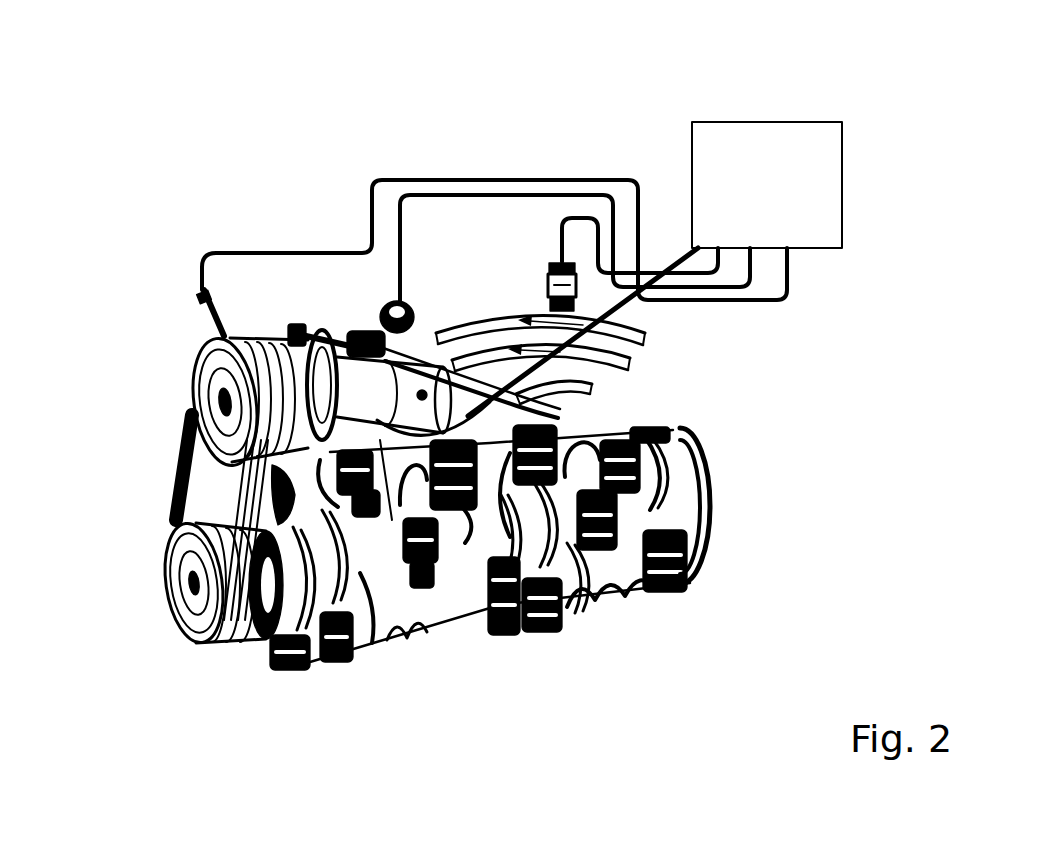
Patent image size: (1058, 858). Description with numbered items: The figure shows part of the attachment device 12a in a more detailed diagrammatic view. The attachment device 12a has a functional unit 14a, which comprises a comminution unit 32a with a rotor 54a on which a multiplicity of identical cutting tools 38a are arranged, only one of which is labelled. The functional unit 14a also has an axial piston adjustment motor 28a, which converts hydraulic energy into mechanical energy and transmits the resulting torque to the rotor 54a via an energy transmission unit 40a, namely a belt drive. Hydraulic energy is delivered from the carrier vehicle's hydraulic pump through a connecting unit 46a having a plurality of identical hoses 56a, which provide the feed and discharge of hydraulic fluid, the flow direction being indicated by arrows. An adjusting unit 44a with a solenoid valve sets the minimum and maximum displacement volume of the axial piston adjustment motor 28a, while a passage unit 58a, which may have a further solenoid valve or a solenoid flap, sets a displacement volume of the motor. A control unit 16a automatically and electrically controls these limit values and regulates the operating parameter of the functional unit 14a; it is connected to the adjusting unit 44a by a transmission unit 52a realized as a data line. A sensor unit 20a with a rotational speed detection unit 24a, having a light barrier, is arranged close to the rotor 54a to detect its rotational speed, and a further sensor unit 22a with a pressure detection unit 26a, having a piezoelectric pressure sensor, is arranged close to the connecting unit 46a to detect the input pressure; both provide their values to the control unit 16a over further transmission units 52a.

The attachment device 12a is at (498, 586).
The functional unit 14a is at (738, 527).
The control unit 16a is at (818, 188).
The sensor unit 20a is at (165, 261).
The further sensor unit 22a is at (542, 279).
The rotational speed detection unit 24a is at (205, 309).
The pressure detection unit 26a is at (558, 252).
The axial piston adjustment motor 28a is at (333, 343).
The comminution unit 32a is at (560, 633).
The cutting tool 38a is at (507, 637).
The energy transmission unit 40a is at (182, 470).
The adjusting unit 44a is at (387, 430).
The connecting unit 46a is at (452, 313).
The transmission unit 52a is at (597, 212).
The rotor 54a is at (707, 472).
The hose 56a is at (647, 334).
The passage unit 58a is at (383, 300).